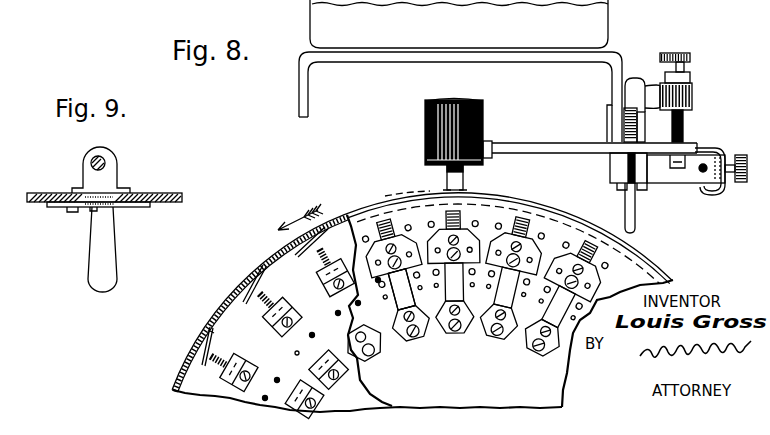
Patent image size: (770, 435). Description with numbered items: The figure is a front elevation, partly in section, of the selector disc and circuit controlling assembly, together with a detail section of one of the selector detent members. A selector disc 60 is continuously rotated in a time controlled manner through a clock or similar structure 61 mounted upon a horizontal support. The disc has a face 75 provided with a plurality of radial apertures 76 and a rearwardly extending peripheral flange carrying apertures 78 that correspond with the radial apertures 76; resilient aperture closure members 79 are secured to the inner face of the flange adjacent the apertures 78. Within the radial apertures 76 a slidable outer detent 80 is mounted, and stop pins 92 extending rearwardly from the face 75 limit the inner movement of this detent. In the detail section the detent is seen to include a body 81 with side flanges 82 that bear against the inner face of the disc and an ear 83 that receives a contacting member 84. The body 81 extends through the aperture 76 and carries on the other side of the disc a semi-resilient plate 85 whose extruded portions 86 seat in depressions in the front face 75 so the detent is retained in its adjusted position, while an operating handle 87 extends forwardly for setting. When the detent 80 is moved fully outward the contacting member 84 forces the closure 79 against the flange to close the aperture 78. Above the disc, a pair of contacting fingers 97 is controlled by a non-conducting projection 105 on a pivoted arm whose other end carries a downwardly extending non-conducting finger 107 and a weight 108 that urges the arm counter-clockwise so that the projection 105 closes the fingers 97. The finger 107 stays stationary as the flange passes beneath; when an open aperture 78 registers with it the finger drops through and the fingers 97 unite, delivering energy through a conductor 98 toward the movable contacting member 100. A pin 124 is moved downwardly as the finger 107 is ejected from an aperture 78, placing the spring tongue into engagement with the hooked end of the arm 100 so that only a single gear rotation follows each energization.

In FIG. 8, the clock 61 is at (600, 15).
In FIG. 8, the weight 108 is at (425, 131).
In FIG. 8, the non-conducting finger 107 is at (464, 177).
In FIG. 8, the contacting fingers 97 is at (696, 78).
In FIG. 8, the non-conducting projection 105 is at (684, 122).
In FIG. 8, the pin 124 is at (627, 168).
In FIG. 8, the conductor 98 is at (714, 196).
In FIG. 8, the movable contacting member 100 is at (627, 213).
In FIG. 8, the selector disc 60 is at (383, 199).
In FIG. 8, the apertures 78 is at (243, 281).
In FIG. 8, the resilient aperture closure members 79 is at (312, 238).
In FIG. 8, the slidable outer detent 80 is at (290, 312).
In FIG. 8, the stop pins 92 is at (299, 353).
In FIG. 8, the face of the selector disc 75 is at (555, 364).
In FIG. 8, the semi-resilient plate 85 is at (402, 238).
In FIG. 9, the semi-resilient plate 85 is at (122, 206).
In FIG. 8, the radial apertures 76 is at (411, 297).
In FIG. 8, the operating handle 87 is at (463, 231).
In FIG. 9, the operating handle 87 is at (108, 258).
In FIG. 8, the contacting member 84 is at (535, 234).
In FIG. 9, the contacting member 84 is at (94, 161).
In FIG. 8, the extruded portions 86 is at (553, 271).
In FIG. 9, the extruded portions 86 is at (141, 206).
In FIG. 9, the body 81 is at (118, 169).
In FIG. 9, the ear 83 is at (108, 153).
In FIG. 9, the side flanges 82 is at (74, 188).